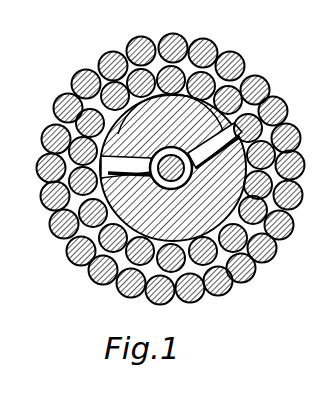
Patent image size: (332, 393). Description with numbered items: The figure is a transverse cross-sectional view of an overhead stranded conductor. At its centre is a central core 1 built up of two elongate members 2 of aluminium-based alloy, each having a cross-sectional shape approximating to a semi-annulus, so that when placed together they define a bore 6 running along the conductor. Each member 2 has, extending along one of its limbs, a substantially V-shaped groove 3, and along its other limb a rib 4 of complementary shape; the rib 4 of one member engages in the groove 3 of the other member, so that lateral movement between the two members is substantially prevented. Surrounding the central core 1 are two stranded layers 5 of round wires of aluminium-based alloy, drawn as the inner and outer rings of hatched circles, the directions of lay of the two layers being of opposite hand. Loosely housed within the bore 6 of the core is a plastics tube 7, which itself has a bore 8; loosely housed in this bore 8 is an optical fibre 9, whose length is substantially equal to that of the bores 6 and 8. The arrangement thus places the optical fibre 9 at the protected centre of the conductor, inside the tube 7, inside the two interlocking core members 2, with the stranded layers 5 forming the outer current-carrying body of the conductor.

The central core 1 is at (259, 72).
The elongate members 2 is at (211, 38).
The V-shaped groove 3 is at (38, 203).
The rib 4 is at (250, 132).
The stranded layers 5 is at (283, 183).
The bore 6 is at (85, 268).
The plastics tube 7 is at (123, 38).
The bore 8 is at (90, 80).
The optical fibre 9 is at (75, 128).